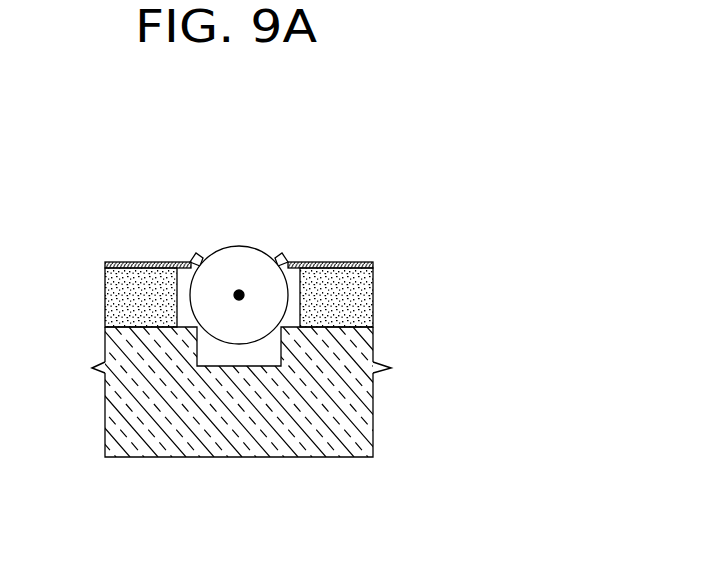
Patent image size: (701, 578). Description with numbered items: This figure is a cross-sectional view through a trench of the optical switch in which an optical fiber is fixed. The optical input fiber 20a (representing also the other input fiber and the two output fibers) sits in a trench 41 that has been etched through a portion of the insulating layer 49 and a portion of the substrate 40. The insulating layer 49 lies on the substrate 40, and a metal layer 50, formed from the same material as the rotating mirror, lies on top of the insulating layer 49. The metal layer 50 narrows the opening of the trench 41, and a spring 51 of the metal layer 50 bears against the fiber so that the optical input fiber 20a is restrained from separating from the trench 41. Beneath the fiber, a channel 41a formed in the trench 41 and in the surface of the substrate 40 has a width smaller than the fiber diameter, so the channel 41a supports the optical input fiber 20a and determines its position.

The optical input fiber 20a is at (235, 246).
The trench 41 is at (189, 249).
The channel 41a is at (198, 348).
The spring 51 is at (285, 257).
The metal layer 50 is at (373, 265).
The insulating layer 49 is at (373, 298).
The substrate 40 is at (373, 413).